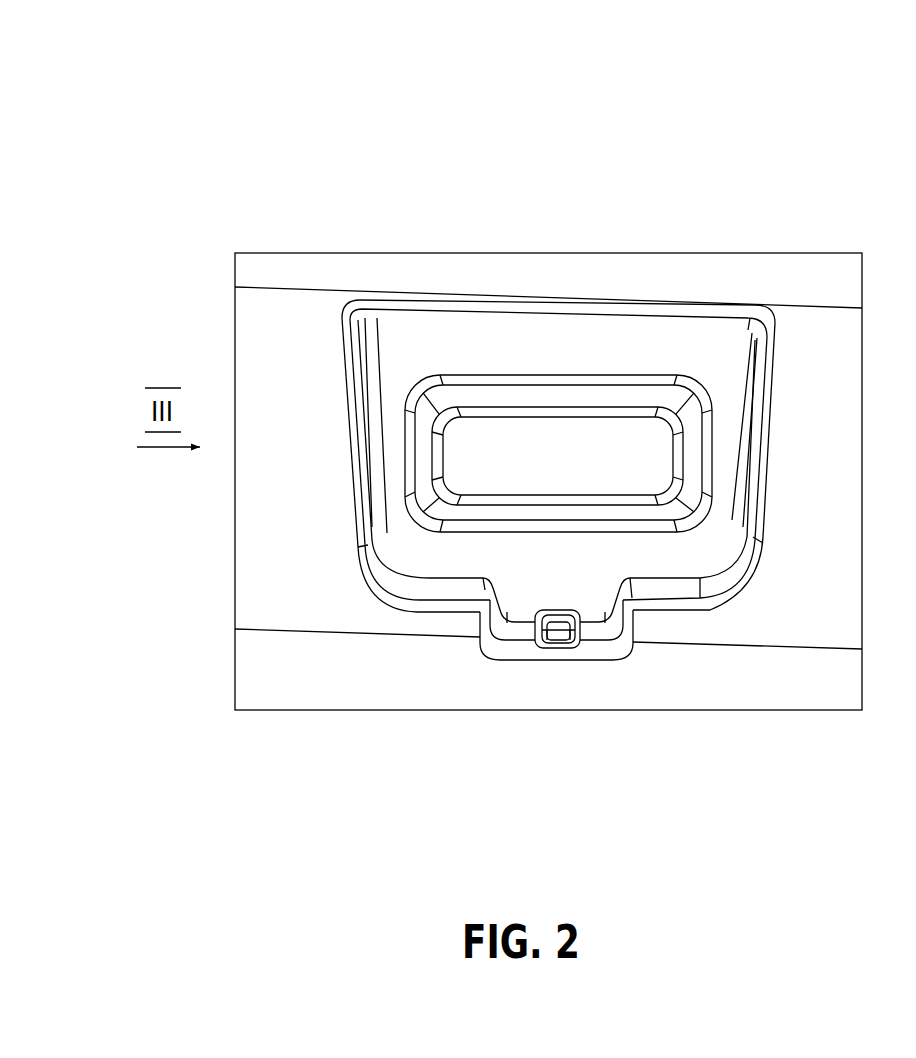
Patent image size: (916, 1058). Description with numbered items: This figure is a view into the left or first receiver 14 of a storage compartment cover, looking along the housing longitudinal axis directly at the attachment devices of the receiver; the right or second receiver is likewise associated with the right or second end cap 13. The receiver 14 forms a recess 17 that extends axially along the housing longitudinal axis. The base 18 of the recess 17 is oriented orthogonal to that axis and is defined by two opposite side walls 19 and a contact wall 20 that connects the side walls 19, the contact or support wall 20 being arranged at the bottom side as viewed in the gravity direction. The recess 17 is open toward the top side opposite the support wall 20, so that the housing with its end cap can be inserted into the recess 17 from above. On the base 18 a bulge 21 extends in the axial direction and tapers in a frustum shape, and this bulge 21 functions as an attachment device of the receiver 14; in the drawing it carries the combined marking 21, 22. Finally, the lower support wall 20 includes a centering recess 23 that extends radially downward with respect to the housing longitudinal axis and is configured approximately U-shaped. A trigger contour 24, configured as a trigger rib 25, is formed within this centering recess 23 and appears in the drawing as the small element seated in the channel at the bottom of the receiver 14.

The second end cap 13 is at (676, 454).
The first receiver 14 is at (800, 163).
The recess 17 is at (647, 333).
The base 18 is at (556, 357).
The side walls 19 is at (363, 381).
The contact wall 20 is at (655, 592).
The bulge 21 is at (557, 456).
The opening edge 22 is at (597, 468).
The centering recess 23 is at (592, 613).
The trigger contour 24 is at (560, 637).
The trigger rib 25 is at (558, 629).